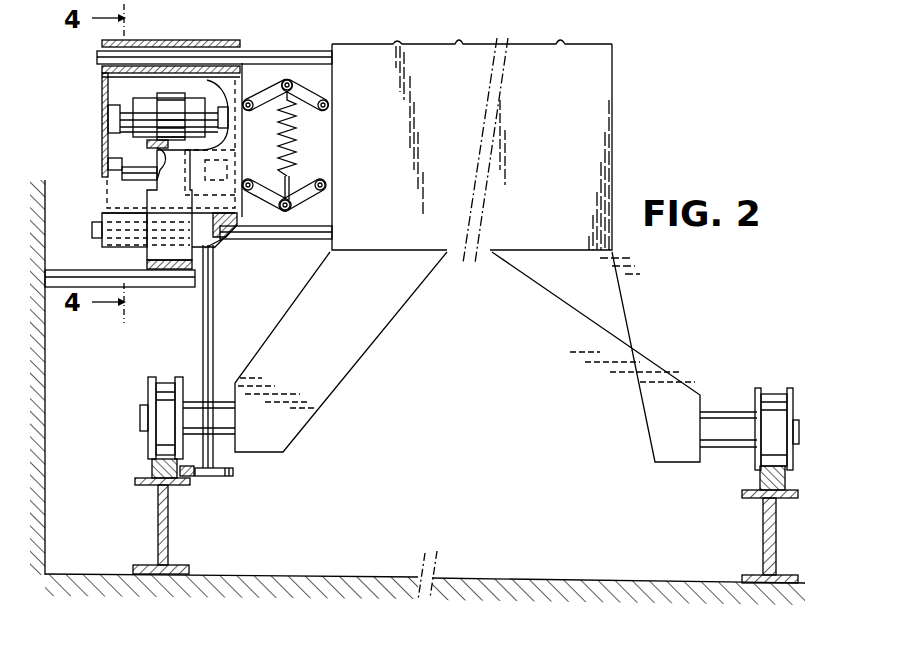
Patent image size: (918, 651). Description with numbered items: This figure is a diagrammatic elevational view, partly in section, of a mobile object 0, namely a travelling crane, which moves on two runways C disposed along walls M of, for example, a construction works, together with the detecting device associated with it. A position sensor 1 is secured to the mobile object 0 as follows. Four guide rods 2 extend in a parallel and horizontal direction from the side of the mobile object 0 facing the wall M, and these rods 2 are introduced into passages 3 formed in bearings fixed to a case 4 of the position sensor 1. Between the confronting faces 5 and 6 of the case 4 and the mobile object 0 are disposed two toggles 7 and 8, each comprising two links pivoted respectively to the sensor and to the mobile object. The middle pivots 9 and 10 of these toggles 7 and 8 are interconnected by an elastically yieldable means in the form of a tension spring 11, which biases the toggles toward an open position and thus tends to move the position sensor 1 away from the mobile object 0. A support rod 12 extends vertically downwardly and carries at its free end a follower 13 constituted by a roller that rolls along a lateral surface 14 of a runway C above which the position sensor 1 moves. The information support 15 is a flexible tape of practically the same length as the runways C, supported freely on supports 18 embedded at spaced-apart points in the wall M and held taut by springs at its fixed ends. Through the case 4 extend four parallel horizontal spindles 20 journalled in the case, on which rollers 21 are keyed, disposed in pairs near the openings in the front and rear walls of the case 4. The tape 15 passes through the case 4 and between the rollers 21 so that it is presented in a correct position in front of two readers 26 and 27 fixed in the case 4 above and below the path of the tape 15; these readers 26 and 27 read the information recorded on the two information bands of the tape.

The mobile object 0 is at (622, 170).
The position sensor 1 is at (94, 75).
The guide rods 2 is at (270, 59).
The passages 3 is at (241, 48).
The case 4 is at (102, 130).
The confronting face of the case 5 is at (258, 143).
The confronting face of the mobile object 6 is at (312, 125).
The toggle 7 is at (310, 97).
The toggle 8 is at (310, 195).
The middle pivot 9 is at (290, 84).
The middle pivot 10 is at (297, 207).
The tension spring 11 is at (296, 132).
The support rod 12 is at (209, 335).
The follower 13 is at (228, 473).
The lateral surface 14 is at (190, 474).
The information support 15 is at (153, 253).
The supports 18 is at (165, 287).
The spindles 20 is at (207, 80).
The rollers 21 is at (168, 93).
The reader 26 is at (127, 134).
The reader 27 is at (128, 156).
The wall M is at (56, 395).
The runway C is at (152, 514).